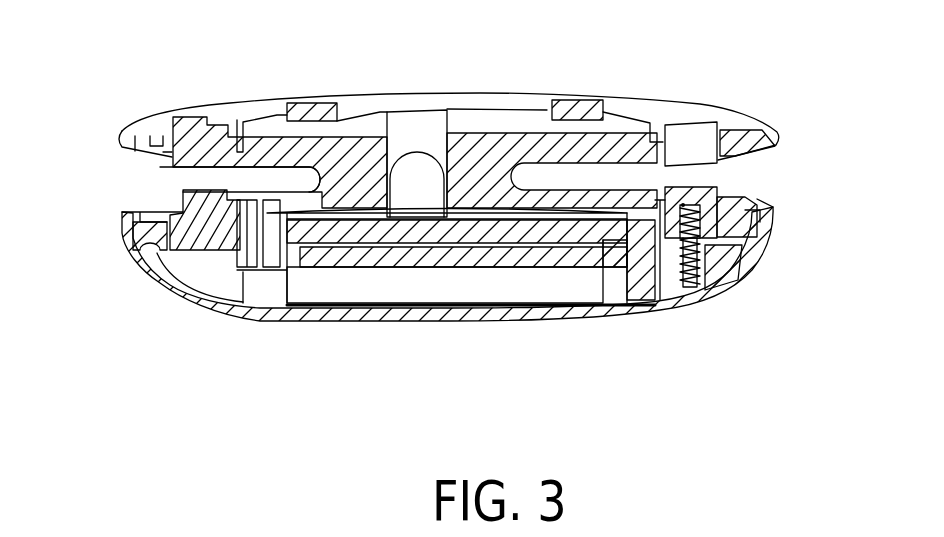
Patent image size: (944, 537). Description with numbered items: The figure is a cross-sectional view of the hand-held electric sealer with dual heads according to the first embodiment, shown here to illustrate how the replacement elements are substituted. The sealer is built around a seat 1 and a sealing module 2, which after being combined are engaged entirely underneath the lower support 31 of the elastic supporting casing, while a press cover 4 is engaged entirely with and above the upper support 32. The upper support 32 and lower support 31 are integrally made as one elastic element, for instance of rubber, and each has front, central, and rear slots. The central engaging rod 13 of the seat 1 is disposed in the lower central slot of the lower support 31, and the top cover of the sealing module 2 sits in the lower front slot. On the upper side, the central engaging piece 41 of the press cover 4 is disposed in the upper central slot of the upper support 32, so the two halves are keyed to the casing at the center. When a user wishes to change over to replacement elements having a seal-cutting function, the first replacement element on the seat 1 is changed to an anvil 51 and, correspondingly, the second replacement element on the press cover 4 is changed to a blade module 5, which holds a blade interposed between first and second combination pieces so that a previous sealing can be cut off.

The seat 1 is at (462, 236).
The central engaging rod 13 is at (402, 200).
The sealing module 2 is at (762, 266).
The lower support 31 is at (280, 200).
The upper support 32 is at (318, 135).
The press cover 4 is at (653, 107).
The central engaging piece 41 is at (447, 133).
The blade module 5 is at (160, 168).
The anvil 51 is at (183, 191).